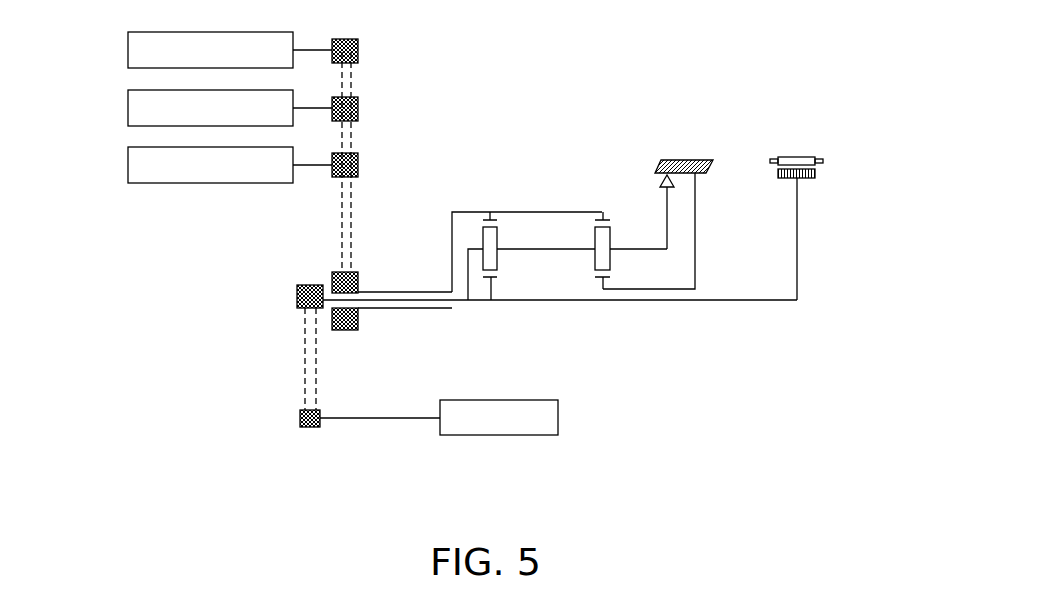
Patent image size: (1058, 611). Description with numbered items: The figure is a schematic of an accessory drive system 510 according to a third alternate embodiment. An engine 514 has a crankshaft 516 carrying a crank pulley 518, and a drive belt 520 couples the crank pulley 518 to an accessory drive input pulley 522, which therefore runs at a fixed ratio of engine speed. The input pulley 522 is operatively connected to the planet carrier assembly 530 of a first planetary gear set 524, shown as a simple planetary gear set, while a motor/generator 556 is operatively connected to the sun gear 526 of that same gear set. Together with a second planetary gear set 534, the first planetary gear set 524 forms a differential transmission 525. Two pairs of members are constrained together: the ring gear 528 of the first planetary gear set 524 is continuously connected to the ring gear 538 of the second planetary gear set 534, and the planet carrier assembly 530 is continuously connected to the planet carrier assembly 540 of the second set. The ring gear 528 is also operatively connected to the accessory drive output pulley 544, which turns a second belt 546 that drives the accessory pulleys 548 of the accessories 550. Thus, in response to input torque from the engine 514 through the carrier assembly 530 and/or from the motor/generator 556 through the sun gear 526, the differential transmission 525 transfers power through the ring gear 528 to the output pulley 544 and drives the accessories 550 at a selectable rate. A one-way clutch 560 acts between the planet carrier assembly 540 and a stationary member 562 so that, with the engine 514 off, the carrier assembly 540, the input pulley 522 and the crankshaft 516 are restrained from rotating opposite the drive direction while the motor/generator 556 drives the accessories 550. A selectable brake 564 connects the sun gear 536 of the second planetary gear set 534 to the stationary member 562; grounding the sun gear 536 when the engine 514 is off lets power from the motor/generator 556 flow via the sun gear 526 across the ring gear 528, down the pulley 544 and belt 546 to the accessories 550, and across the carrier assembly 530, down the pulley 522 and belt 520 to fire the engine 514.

The accessory drive system 510 is at (801, 60).
The engine 514 is at (530, 435).
The crankshaft 516 is at (383, 420).
The crank pulley 518 is at (300, 418).
The drive belt 520 is at (290, 357).
The accessory drive input pulley 522 is at (297, 297).
The first planetary gear set 524 is at (516, 267).
The differential transmission 525 is at (793, 380).
The sun gear 526 is at (487, 279).
The ring gear 528 is at (490, 219).
The planet carrier assembly 530 is at (500, 247).
The second planetary gear set 534 is at (636, 264).
The sun gear 536 is at (600, 279).
The ring gear 538 is at (603, 219).
The planet carrier assembly 540 is at (594, 247).
The accessory drive output pulley 544 is at (345, 331).
The second belt 546 is at (322, 213).
The accessory pulleys 548 is at (358, 51).
The accessories 550 is at (128, 52).
The motor/generator 556 is at (804, 147).
The one-way clutch 560 is at (659, 185).
The stationary member 562 is at (688, 147).
The selectable brake 564 is at (696, 178).